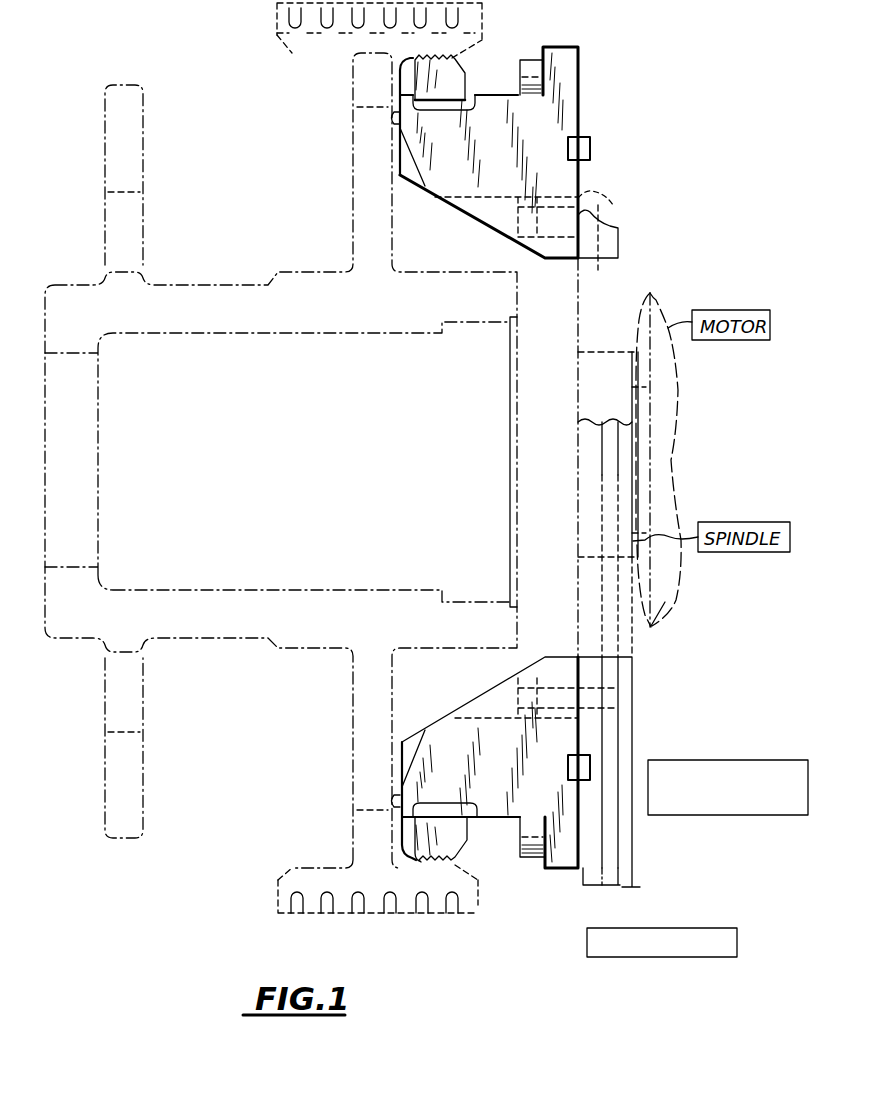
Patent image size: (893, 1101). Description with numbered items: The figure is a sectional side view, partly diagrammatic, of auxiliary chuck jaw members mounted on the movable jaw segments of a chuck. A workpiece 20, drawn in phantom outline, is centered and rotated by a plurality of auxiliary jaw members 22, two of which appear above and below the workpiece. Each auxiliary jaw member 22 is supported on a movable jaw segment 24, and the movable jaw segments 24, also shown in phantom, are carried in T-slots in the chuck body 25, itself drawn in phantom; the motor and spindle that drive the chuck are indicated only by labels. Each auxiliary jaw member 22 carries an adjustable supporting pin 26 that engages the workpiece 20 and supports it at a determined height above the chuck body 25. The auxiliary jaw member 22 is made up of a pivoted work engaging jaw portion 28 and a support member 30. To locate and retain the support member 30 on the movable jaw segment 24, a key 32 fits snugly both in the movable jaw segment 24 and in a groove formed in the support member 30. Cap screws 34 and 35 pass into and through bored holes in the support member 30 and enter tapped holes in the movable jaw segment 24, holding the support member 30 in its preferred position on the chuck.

The workpiece 20 is at (378, 322).
The auxiliary jaw member 22 is at (552, 274).
The movable jaw segment 24 is at (610, 765).
The chuck body 25 is at (592, 886).
The adjustable supporting pin 26 is at (392, 118).
The pivoted work engaging jaw portion 28 is at (448, 70).
The support member 30 is at (495, 112).
The key 32 is at (589, 139).
The cap screw 34 is at (530, 68).
The cap screw 35 is at (601, 230).